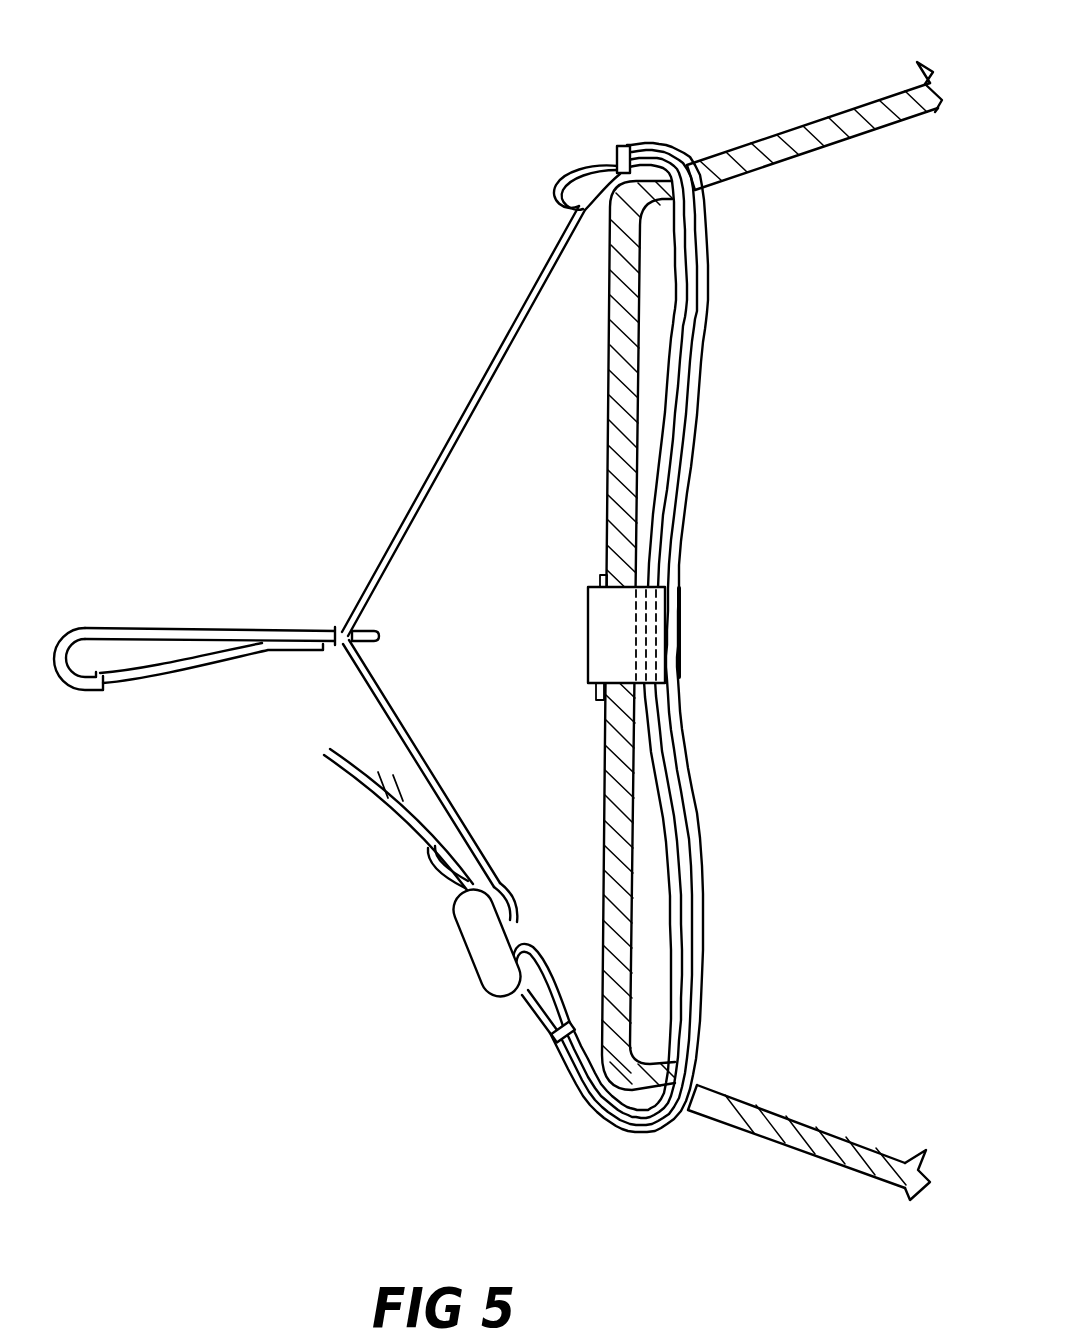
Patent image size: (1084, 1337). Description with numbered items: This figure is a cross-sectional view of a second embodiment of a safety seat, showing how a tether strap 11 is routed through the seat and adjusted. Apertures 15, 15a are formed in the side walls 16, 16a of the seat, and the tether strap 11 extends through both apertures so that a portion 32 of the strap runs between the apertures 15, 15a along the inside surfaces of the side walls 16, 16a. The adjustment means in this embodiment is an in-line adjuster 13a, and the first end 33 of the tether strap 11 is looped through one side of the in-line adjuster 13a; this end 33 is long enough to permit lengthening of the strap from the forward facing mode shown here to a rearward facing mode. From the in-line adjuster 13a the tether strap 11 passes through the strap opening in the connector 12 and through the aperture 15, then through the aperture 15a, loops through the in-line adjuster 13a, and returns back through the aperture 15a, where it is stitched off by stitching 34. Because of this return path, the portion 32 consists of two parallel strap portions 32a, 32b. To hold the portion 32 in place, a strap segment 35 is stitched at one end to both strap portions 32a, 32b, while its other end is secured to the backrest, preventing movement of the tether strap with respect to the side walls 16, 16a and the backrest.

The tether strap 11 is at (494, 374).
The connector 12 is at (167, 628).
The in-line adjuster 13a is at (483, 943).
The aperture 15 is at (689, 162).
The aperture 15a is at (688, 1110).
The side wall 16 is at (805, 130).
The side wall 16a is at (845, 1150).
The portion of the tether strap 32 is at (669, 637).
The strap portion 32a is at (663, 822).
The strap portion 32b is at (687, 778).
The first end of the tether strap 33 is at (352, 776).
The stitching 34 is at (622, 146).
The strap segment 35 is at (631, 627).